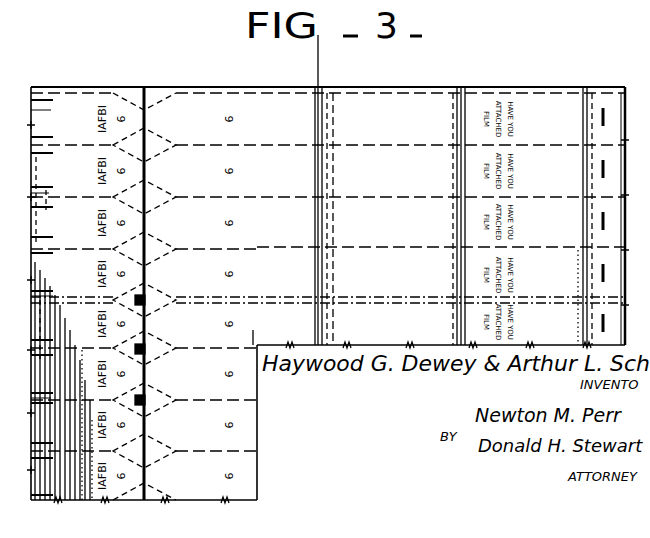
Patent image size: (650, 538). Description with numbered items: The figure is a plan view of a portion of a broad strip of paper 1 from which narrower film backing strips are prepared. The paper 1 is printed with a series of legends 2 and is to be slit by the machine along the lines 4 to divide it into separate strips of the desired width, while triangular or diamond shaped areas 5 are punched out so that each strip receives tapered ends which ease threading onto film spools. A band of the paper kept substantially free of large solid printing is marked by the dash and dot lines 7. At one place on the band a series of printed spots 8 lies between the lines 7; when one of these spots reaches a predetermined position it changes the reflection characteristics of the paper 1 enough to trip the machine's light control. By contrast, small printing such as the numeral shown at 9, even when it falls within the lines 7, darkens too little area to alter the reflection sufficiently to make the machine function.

The broad strip of paper 1 is at (563, 115).
The legends 2 is at (198, 103).
The lines 4 is at (372, 93).
The diamond shaped areas 5 is at (134, 143).
The dash and dot lines 7 is at (367, 300).
The printed spots 8 is at (149, 291).
The printed numeral 9 is at (262, 302).